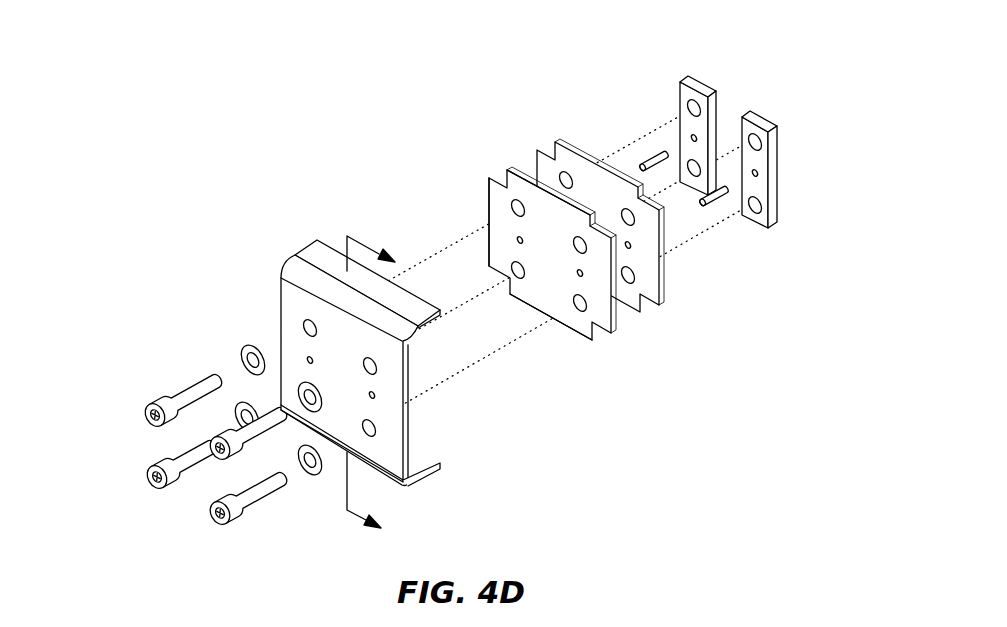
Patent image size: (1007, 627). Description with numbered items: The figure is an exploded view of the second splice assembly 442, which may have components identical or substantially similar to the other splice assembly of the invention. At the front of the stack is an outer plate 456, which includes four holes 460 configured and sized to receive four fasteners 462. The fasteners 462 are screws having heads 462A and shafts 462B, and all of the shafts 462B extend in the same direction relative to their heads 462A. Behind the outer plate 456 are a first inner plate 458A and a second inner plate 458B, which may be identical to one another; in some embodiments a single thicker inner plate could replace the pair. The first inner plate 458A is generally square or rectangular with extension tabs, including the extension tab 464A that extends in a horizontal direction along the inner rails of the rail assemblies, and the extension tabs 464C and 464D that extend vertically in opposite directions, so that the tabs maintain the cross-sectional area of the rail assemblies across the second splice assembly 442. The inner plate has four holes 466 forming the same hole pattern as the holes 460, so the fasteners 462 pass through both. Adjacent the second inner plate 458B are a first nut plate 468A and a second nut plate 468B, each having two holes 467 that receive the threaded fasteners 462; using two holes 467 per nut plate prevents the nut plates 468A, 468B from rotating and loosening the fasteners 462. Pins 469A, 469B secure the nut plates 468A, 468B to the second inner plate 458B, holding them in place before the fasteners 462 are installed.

The second splice assembly 442 is at (347, 138).
The outer plate 456 is at (313, 241).
The first inner plate 458A is at (615, 332).
The second inner plate 458B is at (661, 305).
The holes 460 is at (306, 322).
The fasteners 462 is at (183, 388).
The heads 462A is at (210, 527).
The shafts 462B is at (203, 380).
The extension tab 464A is at (489, 213).
The extension tab 464C is at (524, 172).
The extension tab 464D is at (578, 322).
The holes 466 is at (512, 205).
The holes 467 is at (697, 87).
The first nut plate 468A is at (680, 88).
The second nut plate 468B is at (778, 168).
The pin 469A is at (643, 163).
The pin 469B is at (714, 208).